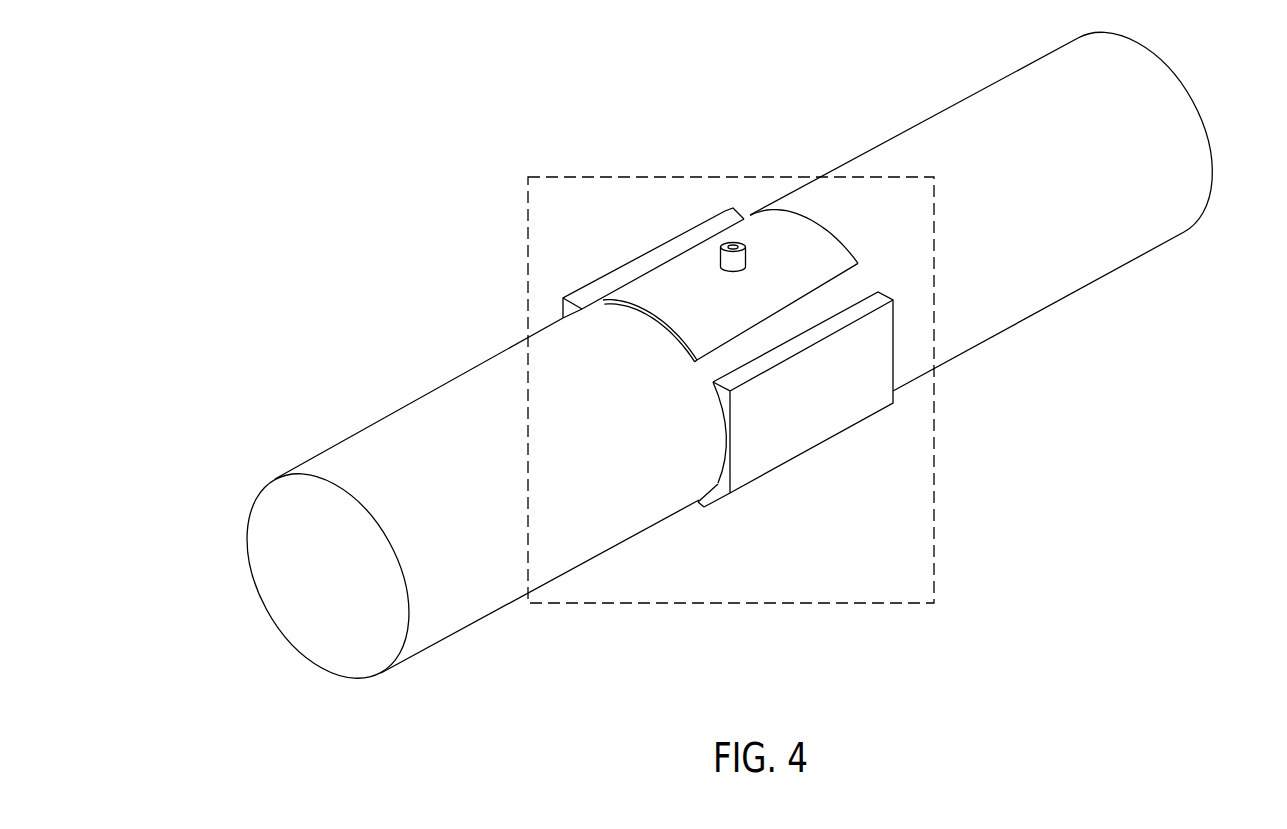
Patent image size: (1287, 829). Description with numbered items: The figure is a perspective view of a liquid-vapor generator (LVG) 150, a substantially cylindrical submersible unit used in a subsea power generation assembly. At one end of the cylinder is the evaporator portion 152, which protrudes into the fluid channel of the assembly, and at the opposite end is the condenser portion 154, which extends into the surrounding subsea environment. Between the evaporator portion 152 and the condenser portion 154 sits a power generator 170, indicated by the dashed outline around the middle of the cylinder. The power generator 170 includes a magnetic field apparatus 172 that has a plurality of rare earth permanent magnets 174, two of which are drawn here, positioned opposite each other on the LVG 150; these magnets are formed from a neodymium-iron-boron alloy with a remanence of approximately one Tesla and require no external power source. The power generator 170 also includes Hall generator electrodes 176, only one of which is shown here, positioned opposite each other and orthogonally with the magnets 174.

The liquid-vapor generator 150 is at (716, 369).
The evaporator portion 152 is at (227, 523).
The condenser portion 154 is at (1205, 102).
The power generator 170 is at (688, 392).
The magnetic field apparatus 172 is at (567, 283).
The rare earth permanent magnets 174 is at (617, 270).
The Hall generator electrodes 176 is at (730, 237).